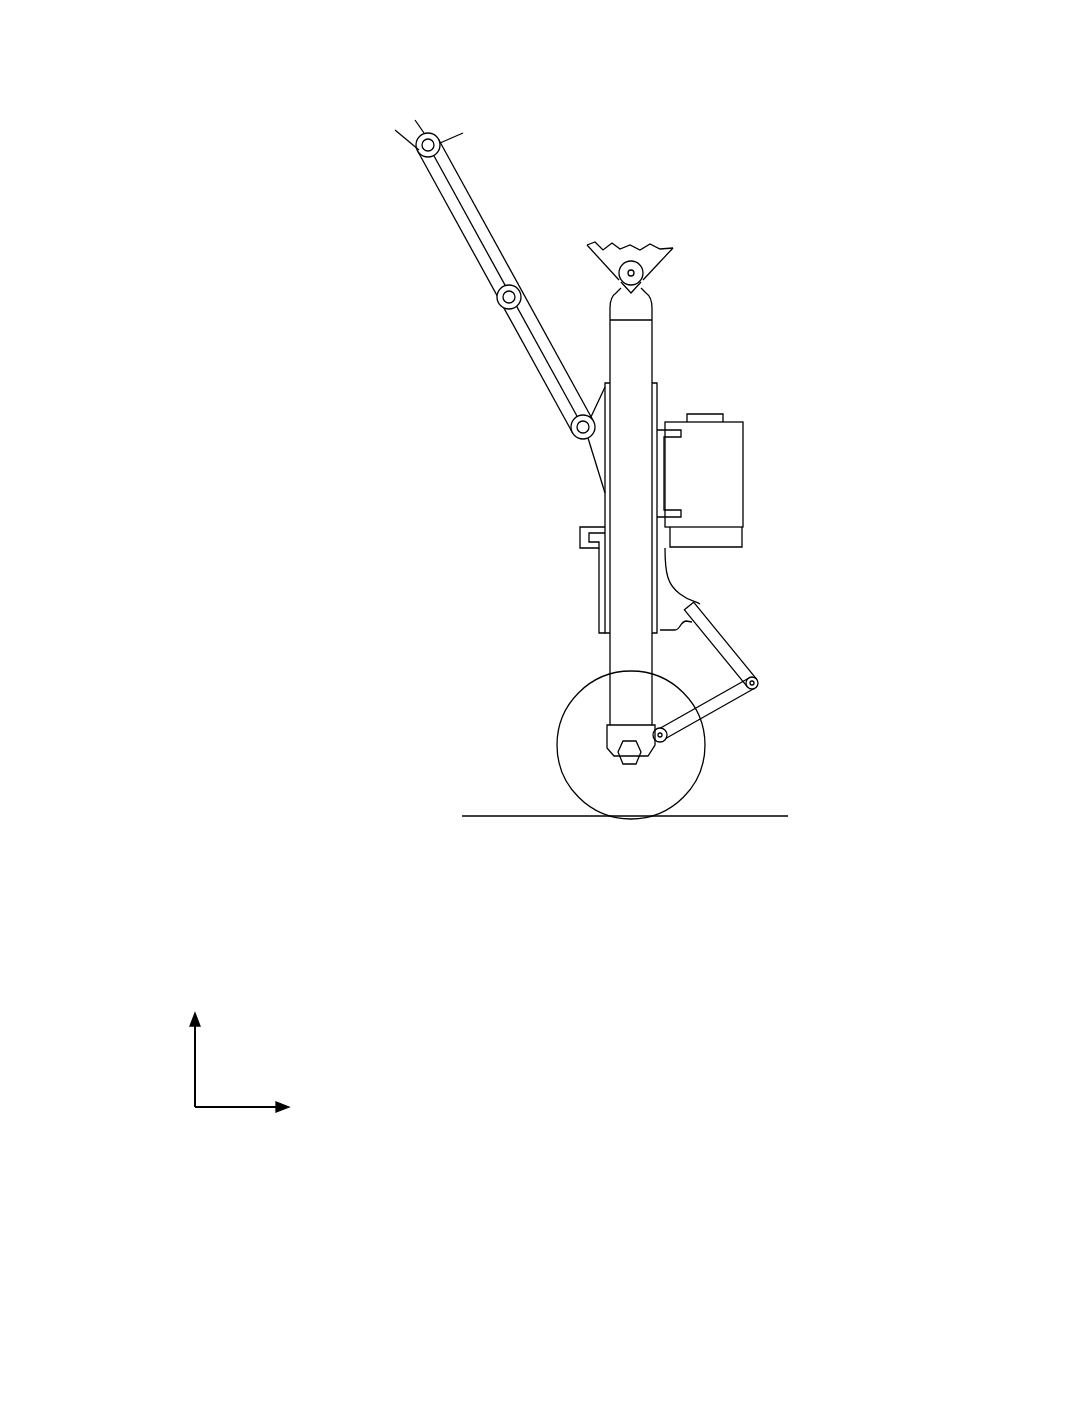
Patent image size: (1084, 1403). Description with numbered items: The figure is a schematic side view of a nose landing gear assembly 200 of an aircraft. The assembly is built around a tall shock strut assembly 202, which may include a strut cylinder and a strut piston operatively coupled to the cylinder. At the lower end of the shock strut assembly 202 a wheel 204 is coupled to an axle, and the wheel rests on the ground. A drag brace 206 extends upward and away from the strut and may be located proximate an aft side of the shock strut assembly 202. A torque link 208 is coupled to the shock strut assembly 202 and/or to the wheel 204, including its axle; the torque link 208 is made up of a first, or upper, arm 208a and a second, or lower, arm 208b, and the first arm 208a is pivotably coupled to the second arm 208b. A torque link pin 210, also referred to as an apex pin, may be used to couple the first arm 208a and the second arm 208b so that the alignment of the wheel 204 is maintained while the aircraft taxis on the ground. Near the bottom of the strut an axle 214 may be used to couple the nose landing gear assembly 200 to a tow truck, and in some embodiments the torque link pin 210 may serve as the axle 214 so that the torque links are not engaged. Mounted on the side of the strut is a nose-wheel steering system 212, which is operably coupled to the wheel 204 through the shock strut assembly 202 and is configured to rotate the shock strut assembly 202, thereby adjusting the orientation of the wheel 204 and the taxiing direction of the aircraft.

The nose landing gear assembly 200 is at (170, 102).
The shock strut assembly 202 is at (666, 333).
The wheel 204 is at (690, 775).
The drag brace 206 is at (468, 197).
The torque link 208 is at (741, 608).
The first arm 208a is at (730, 643).
The second arm 208b is at (713, 708).
The torque link pin 210 is at (758, 683).
The steering system 212 is at (762, 450).
The axle 214 is at (628, 757).